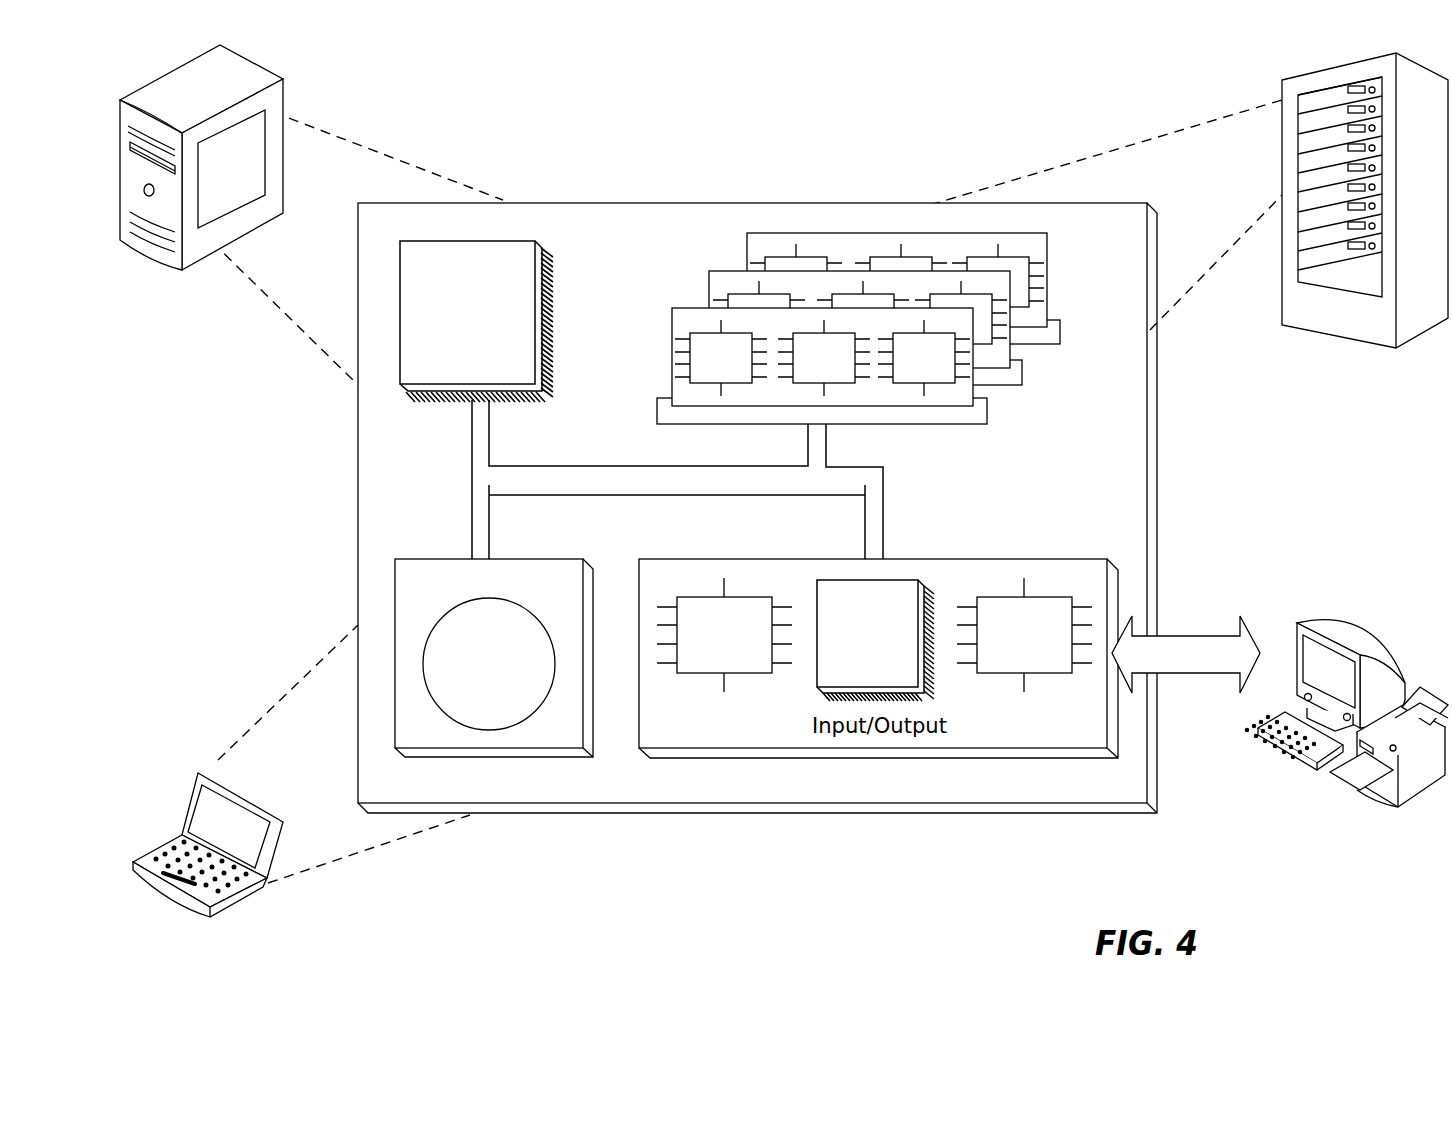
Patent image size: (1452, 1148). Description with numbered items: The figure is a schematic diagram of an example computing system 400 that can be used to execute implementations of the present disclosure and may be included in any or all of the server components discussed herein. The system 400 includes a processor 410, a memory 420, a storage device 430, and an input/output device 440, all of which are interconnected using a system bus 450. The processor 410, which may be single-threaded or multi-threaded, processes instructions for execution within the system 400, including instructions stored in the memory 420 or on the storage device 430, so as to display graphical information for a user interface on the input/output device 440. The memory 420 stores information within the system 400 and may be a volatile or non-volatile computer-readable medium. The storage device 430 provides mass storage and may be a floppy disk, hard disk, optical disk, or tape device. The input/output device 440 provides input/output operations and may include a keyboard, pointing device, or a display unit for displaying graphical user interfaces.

The computing system 400 is at (568, 122).
The processor 410 is at (525, 377).
The memory 420 is at (1053, 383).
The storage device 430 is at (572, 739).
The input/output device 440 is at (1297, 628).
The system bus 450 is at (672, 485).